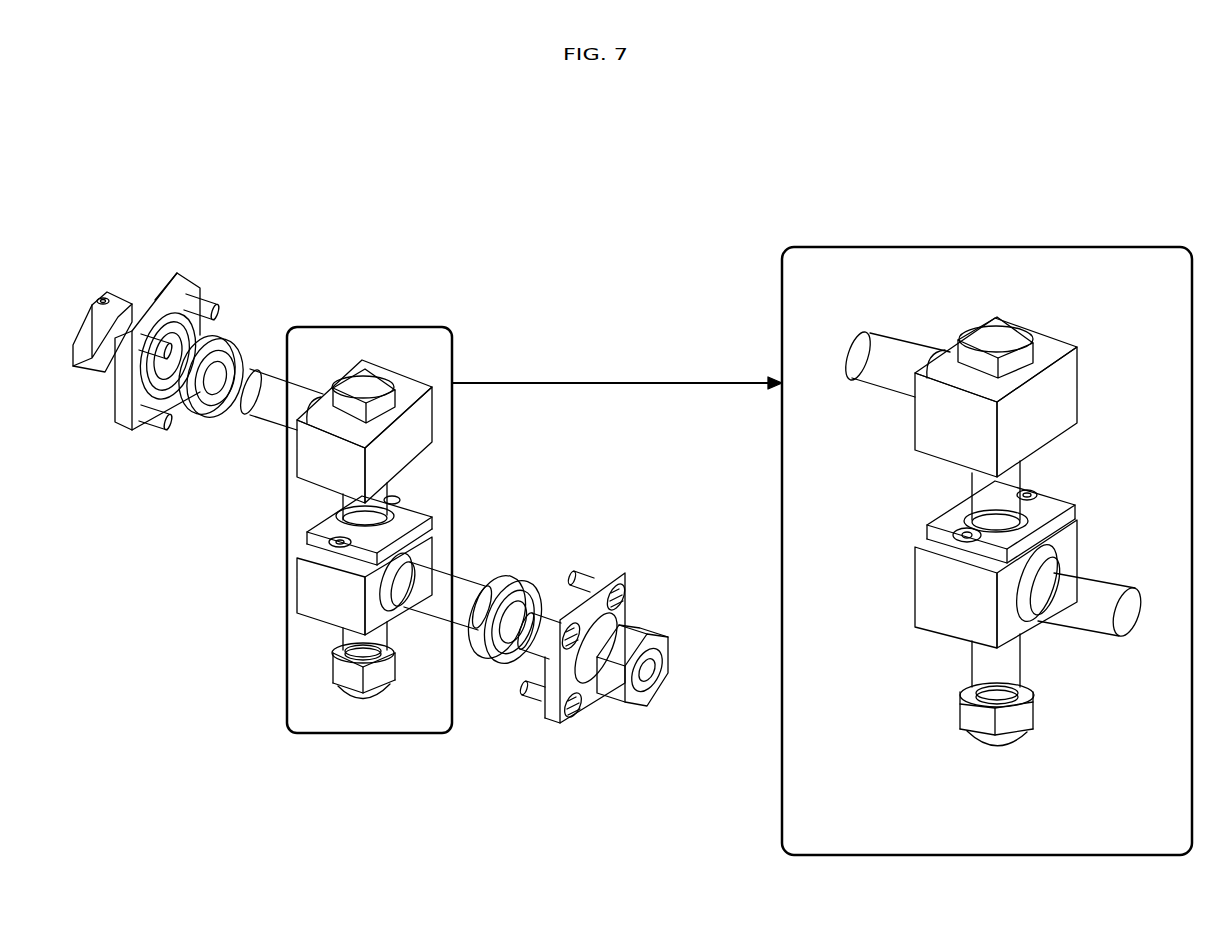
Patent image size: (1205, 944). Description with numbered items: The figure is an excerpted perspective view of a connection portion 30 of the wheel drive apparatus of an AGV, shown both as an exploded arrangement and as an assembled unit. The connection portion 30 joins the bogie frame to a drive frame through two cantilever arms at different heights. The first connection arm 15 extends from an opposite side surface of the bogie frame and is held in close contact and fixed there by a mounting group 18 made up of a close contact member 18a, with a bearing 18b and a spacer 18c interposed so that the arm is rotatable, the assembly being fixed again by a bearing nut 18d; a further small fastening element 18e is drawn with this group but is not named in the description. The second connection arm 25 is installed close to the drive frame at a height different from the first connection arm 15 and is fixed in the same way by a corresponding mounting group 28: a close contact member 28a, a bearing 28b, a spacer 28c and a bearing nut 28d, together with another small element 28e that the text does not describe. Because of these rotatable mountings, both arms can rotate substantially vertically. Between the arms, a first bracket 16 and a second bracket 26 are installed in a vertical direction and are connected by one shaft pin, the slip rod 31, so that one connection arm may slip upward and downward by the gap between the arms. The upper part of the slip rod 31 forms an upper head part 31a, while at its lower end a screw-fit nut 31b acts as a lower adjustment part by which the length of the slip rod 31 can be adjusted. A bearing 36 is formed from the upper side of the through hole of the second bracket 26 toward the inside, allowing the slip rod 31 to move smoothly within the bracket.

The first connection arm 15 is at (268, 385).
The first bracket 16 is at (318, 476).
The bracket assembly 18 is at (147, 429).
The close contact member 18a is at (123, 413).
The bearing 18b is at (211, 439).
The spacer 18c is at (175, 375).
The bearing nut 18d is at (85, 355).
The mounting pins 18e is at (153, 418).
The second connection arm 25 is at (463, 587).
The second bracket 26 is at (320, 600).
The coupling assembly 28 is at (588, 606).
The close contact member 28a is at (598, 593).
The bearing 28b is at (507, 585).
The spacer 28c is at (543, 610).
The bearing nut 28d is at (658, 646).
The coupling pins 28e is at (580, 580).
The connection portion 30 is at (1148, 805).
The shaft pin (slip rod) 31 is at (377, 513).
The upper head part 31a is at (366, 383).
The screw-fit nut 31b is at (357, 684).
The bearing 36 is at (318, 540).